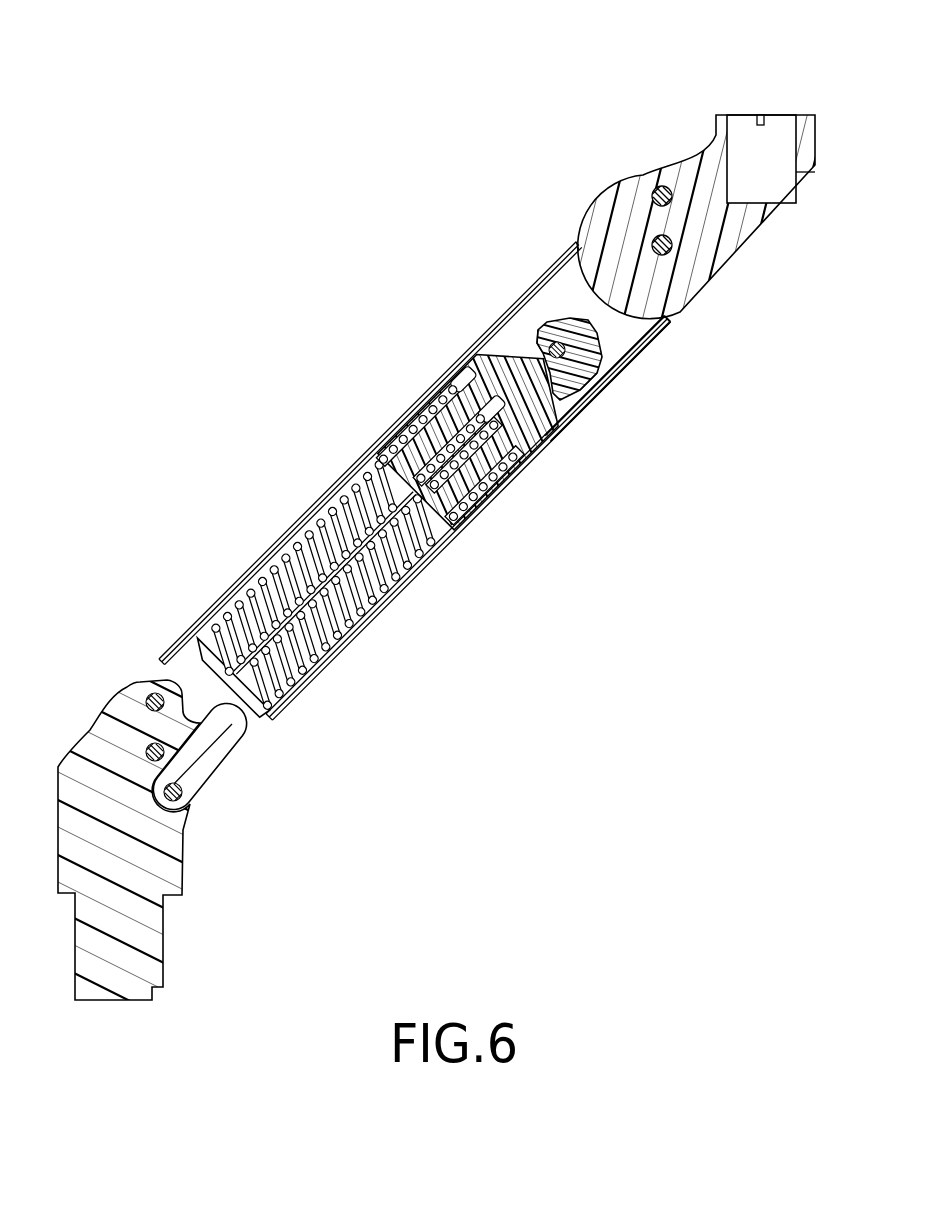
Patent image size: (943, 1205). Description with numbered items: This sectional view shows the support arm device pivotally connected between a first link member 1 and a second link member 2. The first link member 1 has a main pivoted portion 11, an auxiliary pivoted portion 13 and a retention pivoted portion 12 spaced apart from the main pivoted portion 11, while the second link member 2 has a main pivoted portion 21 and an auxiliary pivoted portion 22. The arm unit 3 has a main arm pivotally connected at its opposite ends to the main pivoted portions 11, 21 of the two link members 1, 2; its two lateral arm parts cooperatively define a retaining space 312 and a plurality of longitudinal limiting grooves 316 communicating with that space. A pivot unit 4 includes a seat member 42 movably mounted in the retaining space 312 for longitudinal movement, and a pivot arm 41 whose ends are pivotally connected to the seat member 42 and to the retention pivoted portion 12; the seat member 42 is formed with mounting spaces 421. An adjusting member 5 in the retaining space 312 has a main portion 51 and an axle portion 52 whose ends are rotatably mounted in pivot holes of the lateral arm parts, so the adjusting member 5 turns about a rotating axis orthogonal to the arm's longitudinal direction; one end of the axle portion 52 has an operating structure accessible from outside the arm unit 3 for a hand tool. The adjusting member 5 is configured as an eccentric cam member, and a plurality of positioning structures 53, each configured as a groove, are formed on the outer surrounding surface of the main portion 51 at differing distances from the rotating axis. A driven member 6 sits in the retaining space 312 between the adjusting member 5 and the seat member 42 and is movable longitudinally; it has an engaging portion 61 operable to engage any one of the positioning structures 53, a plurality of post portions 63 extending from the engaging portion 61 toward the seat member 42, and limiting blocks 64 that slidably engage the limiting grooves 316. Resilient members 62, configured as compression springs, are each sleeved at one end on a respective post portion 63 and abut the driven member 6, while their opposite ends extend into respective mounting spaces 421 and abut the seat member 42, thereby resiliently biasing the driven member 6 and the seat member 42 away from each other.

The first link member 1 is at (192, 942).
The main pivoted portion 11 is at (148, 750).
The retention pivoted portion 12 is at (182, 797).
The auxiliary pivoted portion 13 is at (150, 693).
The second link member 2 is at (757, 106).
The main pivoted portion 21 is at (670, 250).
The auxiliary pivoted portion 22 is at (660, 187).
The arm unit 3 is at (394, 495).
The retaining space 312 is at (515, 328).
The limiting grooves 316 is at (447, 380).
The pivot unit 4 is at (295, 607).
The pivot arm 41 is at (207, 760).
The seat member 42 is at (272, 712).
The mounting spaces 421 is at (295, 535).
The adjusting member 5 is at (602, 337).
The main portion 51 is at (607, 377).
The axle portion 52 is at (558, 342).
The positioning structures 53 is at (541, 340).
The driven member 6 is at (459, 433).
The engaging portion 61 is at (527, 370).
The resilient members 62 is at (352, 476).
The post portions 63 is at (412, 433).
The limiting blocks 64 is at (458, 378).